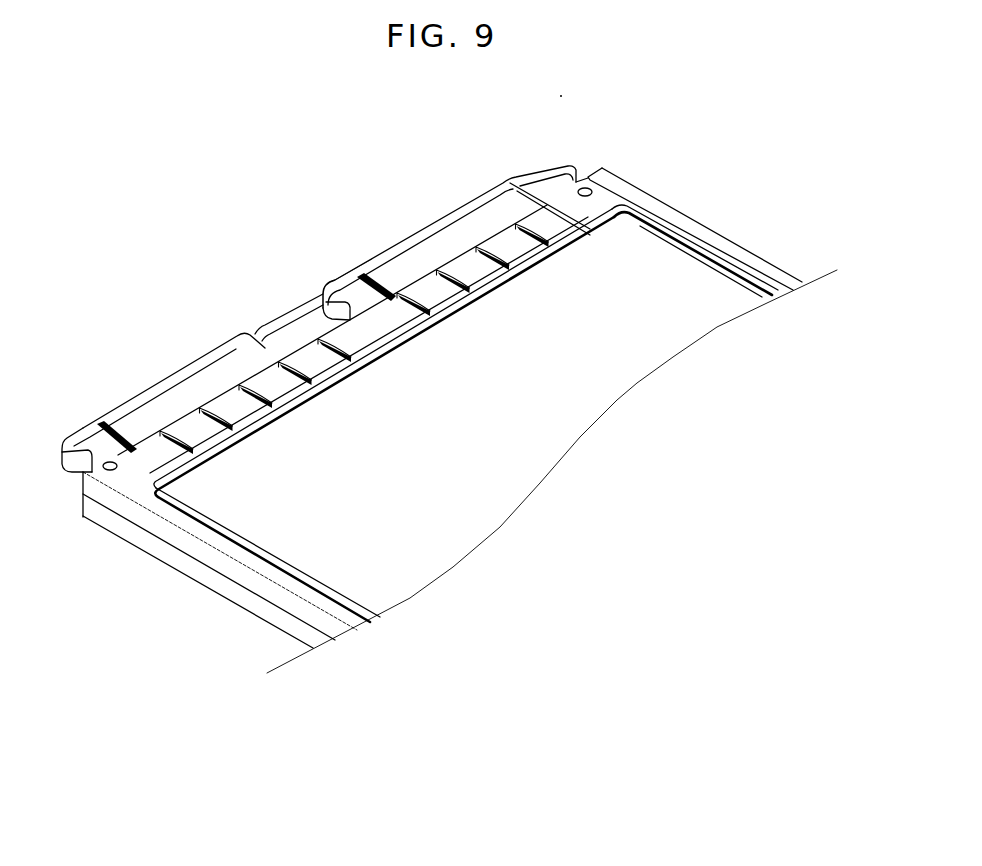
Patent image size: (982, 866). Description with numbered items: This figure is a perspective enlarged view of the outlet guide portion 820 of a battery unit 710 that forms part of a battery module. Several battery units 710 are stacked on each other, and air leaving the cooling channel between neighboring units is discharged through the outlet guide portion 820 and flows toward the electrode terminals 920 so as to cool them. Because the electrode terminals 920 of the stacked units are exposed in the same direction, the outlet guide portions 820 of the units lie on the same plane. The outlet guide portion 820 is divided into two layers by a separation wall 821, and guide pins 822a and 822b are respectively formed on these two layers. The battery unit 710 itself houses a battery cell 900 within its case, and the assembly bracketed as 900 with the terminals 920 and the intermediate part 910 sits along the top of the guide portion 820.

The battery unit 710 is at (670, 120).
The outlet guide portion 820 is at (158, 450).
The separation wall 821 is at (190, 427).
The guide pin 822a is at (257, 427).
The guide pin 822b is at (272, 395).
The battery cell 900 is at (453, 182).
The guide body 910 is at (400, 383).
The electrode terminal 920 is at (247, 365).